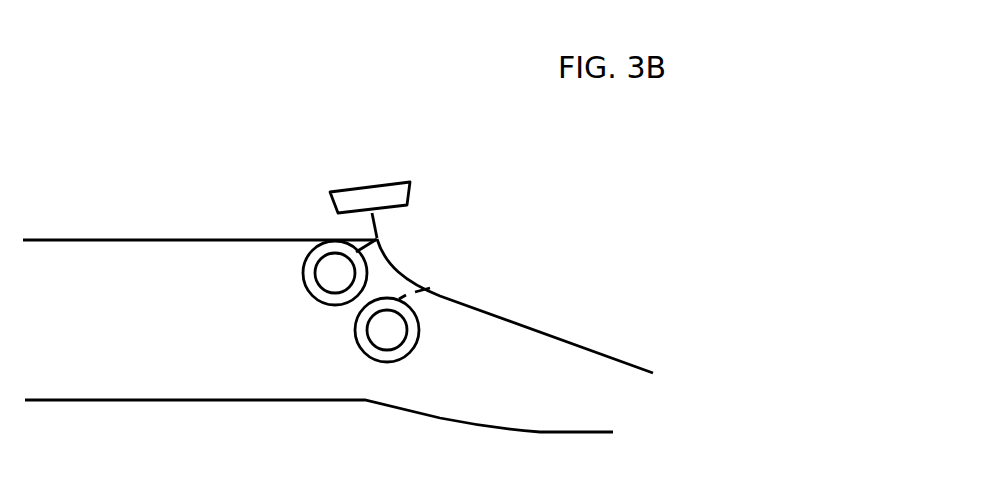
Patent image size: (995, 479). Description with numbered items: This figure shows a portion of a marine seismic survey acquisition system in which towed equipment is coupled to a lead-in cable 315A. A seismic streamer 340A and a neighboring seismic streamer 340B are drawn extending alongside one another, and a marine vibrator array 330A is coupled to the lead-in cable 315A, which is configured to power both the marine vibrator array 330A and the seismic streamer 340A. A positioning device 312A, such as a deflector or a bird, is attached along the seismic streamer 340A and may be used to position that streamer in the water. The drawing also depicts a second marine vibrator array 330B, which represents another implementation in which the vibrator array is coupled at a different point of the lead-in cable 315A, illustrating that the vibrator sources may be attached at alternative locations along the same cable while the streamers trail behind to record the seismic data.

The positioning device 312A is at (390, 180).
The lead-in cable 315A is at (570, 340).
The marine vibrator array 330A is at (315, 305).
The marine vibrator array 330B is at (412, 352).
The seismic streamer 340A is at (143, 238).
The seismic streamer 340B is at (172, 397).